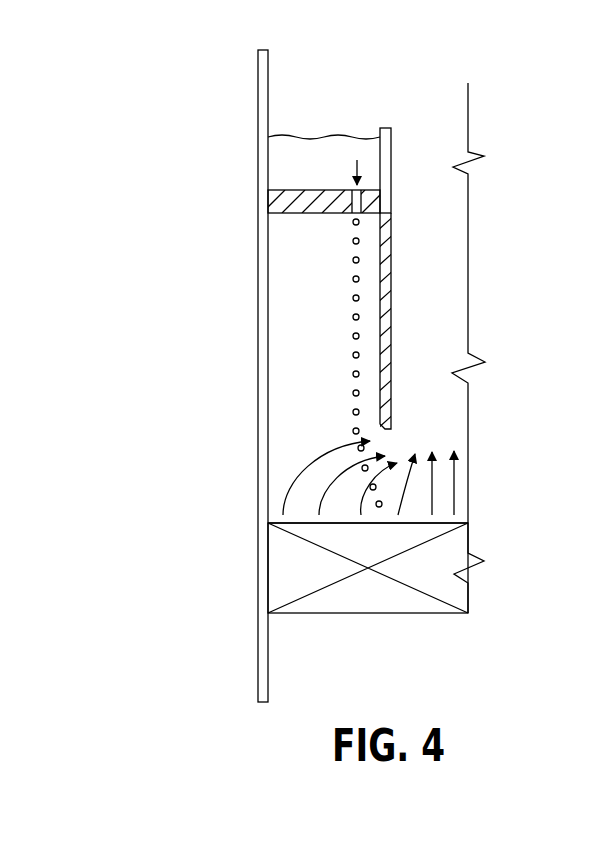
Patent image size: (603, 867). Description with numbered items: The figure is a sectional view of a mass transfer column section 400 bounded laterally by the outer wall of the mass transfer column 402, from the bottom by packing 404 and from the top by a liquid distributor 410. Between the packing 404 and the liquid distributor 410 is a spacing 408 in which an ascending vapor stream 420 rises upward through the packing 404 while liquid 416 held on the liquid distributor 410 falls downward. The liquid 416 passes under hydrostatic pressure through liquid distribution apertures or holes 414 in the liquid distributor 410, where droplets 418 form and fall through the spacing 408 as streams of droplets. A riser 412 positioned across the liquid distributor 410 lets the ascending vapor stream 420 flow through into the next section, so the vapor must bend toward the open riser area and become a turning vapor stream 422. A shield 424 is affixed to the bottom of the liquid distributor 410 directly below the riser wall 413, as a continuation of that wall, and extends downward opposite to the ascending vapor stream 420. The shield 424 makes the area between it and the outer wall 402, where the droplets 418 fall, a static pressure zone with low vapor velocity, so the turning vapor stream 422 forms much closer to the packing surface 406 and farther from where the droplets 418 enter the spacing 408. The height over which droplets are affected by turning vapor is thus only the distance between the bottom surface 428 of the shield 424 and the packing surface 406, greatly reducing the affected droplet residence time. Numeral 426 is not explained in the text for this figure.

The mass transfer column section 400 is at (229, 87).
The outer wall of the mass transfer column 402 is at (258, 358).
The packing 404 is at (443, 582).
The packing surface 406 is at (457, 523).
The spacing 408 is at (285, 420).
The liquid distributor 410 is at (288, 210).
The riser 412 is at (420, 197).
The riser wall 413 is at (386, 128).
The liquid distribution apertures or holes 414 is at (330, 200).
The liquid 416 is at (285, 162).
The droplets 418 is at (352, 260).
The ascending vapor stream 420 is at (455, 477).
The turning vapor stream 422 is at (300, 455).
The shield 424 is at (385, 290).
The plate corner 426 is at (367, 214).
The bottom surface of the shield 428 is at (392, 440).